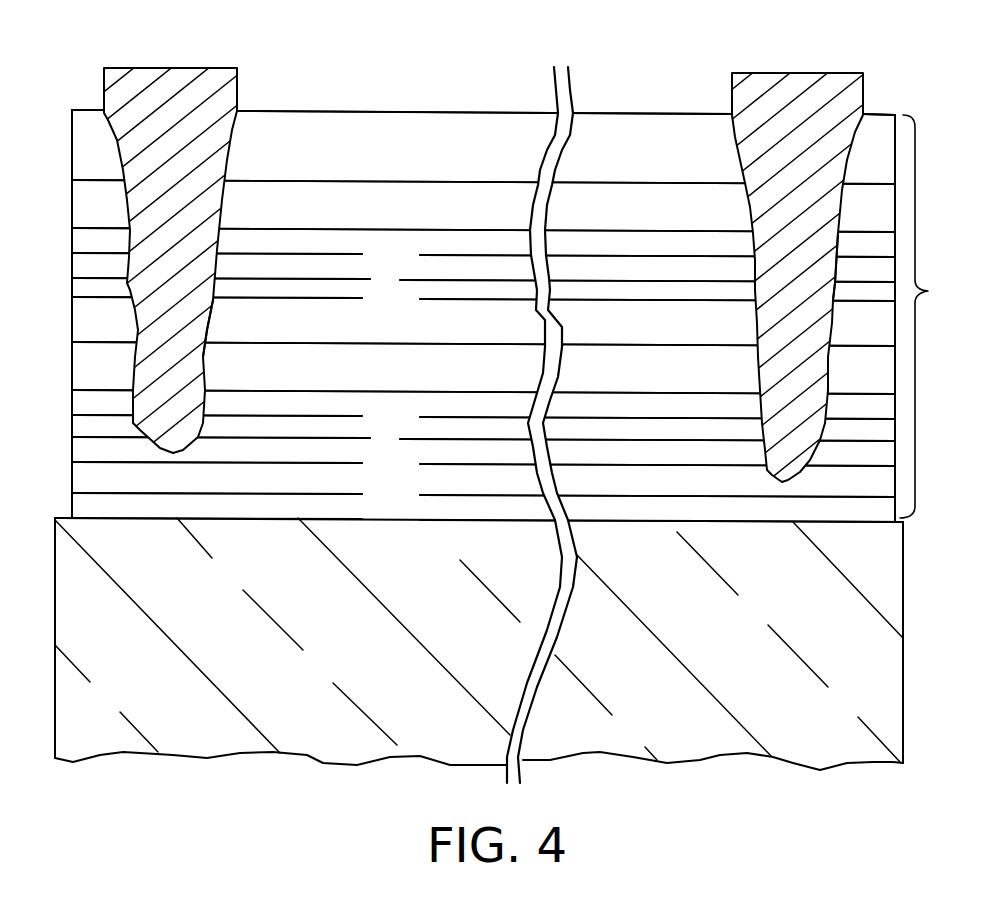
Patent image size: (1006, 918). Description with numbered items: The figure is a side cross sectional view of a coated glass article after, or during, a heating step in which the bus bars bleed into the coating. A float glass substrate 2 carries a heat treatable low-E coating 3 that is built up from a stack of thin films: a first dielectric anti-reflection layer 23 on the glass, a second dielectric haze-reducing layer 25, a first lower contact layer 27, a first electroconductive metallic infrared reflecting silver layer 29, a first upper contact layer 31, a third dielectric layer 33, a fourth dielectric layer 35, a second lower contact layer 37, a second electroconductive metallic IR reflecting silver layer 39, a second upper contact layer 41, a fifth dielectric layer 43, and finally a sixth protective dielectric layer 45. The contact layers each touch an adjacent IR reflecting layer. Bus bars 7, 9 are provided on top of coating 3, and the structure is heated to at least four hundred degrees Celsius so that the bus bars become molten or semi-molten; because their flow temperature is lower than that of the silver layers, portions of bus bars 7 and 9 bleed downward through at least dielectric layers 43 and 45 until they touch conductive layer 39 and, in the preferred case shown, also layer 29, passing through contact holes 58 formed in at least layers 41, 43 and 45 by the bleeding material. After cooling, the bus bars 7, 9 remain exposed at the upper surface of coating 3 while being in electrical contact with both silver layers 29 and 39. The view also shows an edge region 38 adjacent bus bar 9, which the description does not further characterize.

The substrate 2 is at (873, 658).
The low-E coating 3 is at (513, 316).
The bus bar 7 is at (132, 80).
The bus bar 9 is at (800, 86).
The first dielectric anti-reflection layer 23 is at (857, 522).
The second dielectric haze-reducing layer 25 is at (742, 480).
The first lower contact layer 27 is at (878, 457).
The first electroconductive metallic infrared reflecting layer 29 is at (878, 433).
The first upper contact layer 31 is at (878, 412).
The third dielectric layer 33 is at (882, 378).
The fourth dielectric layer 35 is at (703, 330).
The second lower contact layer 37 is at (640, 293).
The edge of bus bar contact 9 38 is at (842, 212).
The second electroconductive metallic IR reflecting layer 39 is at (613, 273).
The second upper contact layer 41 is at (592, 248).
The fifth dielectric layer 43 is at (480, 208).
The sixth protective dielectric layer 45 is at (313, 130).
The contact holes 58 is at (220, 214).